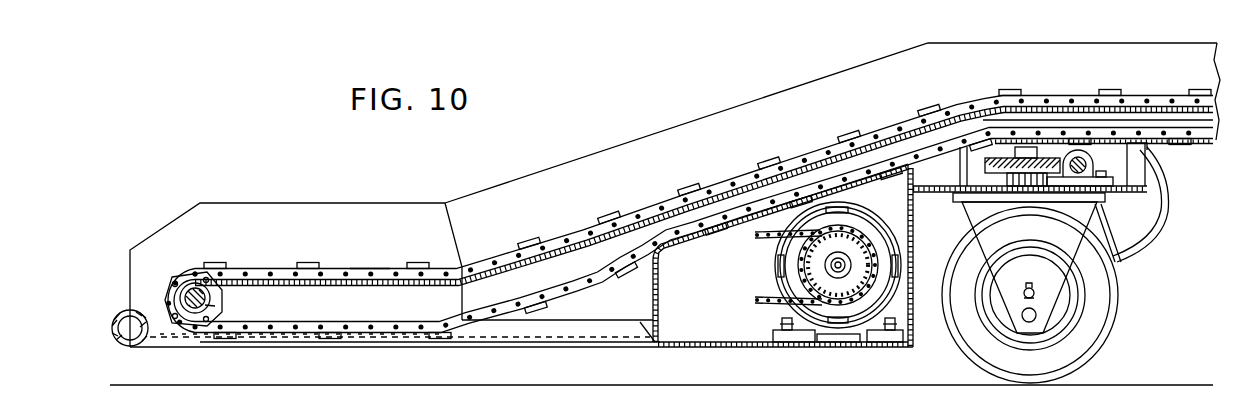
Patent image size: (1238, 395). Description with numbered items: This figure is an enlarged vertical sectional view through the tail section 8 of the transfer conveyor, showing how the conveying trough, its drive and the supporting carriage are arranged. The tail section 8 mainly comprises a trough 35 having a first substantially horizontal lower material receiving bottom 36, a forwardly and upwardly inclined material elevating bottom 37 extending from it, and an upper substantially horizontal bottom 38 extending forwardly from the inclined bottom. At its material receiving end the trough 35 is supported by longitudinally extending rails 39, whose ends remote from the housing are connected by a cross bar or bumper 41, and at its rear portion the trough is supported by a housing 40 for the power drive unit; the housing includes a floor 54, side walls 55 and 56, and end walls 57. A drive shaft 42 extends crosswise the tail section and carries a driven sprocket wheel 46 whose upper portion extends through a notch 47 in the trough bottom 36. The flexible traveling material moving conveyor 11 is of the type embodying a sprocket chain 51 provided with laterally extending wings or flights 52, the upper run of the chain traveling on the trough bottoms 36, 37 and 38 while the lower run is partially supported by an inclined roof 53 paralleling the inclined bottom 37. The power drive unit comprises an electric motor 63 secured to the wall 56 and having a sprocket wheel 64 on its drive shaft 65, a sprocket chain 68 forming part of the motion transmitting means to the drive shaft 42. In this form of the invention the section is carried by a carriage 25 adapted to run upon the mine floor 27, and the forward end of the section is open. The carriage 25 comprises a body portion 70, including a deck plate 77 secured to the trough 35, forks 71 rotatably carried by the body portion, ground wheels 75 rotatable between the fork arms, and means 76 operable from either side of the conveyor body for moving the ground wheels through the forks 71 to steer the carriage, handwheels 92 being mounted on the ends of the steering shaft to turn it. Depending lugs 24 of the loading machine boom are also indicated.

The tail section 8 is at (592, 153).
The flexible traveling material moving conveyor 11 is at (563, 225).
The depending lugs 24 is at (793, 302).
The carriage 25 is at (1137, 284).
The mine floor 27 is at (661, 367).
The trough 35 is at (251, 206).
The lower material receiving bottom 36 is at (704, 211).
The inclined material elevating bottom 37 is at (704, 199).
The upper horizontal bottom 38 is at (1168, 155).
The rails 39 is at (521, 356).
The housing 40 is at (661, 346).
The cross bar or bumper 41 is at (114, 321).
The drive shaft 42 is at (208, 298).
The driven sprocket wheel 46 is at (243, 308).
The notch 47 is at (237, 268).
The sprocket chain 51 is at (366, 270).
The flights 52 is at (307, 267).
The inclined roof 53 is at (704, 226).
The floor 54 is at (783, 357).
The side wall 55 is at (660, 302).
The side wall 56 is at (924, 255).
The end walls 57 is at (670, 350).
The electric motor 63 is at (876, 227).
The sprocket wheel 64 is at (778, 289).
The drive shaft 65 is at (842, 263).
The sprocket chain 68 is at (780, 249).
The body portion 70 is at (1177, 203).
The forks 71 is at (1016, 249).
The ground wheels 75 is at (1063, 312).
The steering means 76 is at (1090, 165).
The deck plate 77 is at (1030, 203).
The handwheels 92 is at (1153, 203).